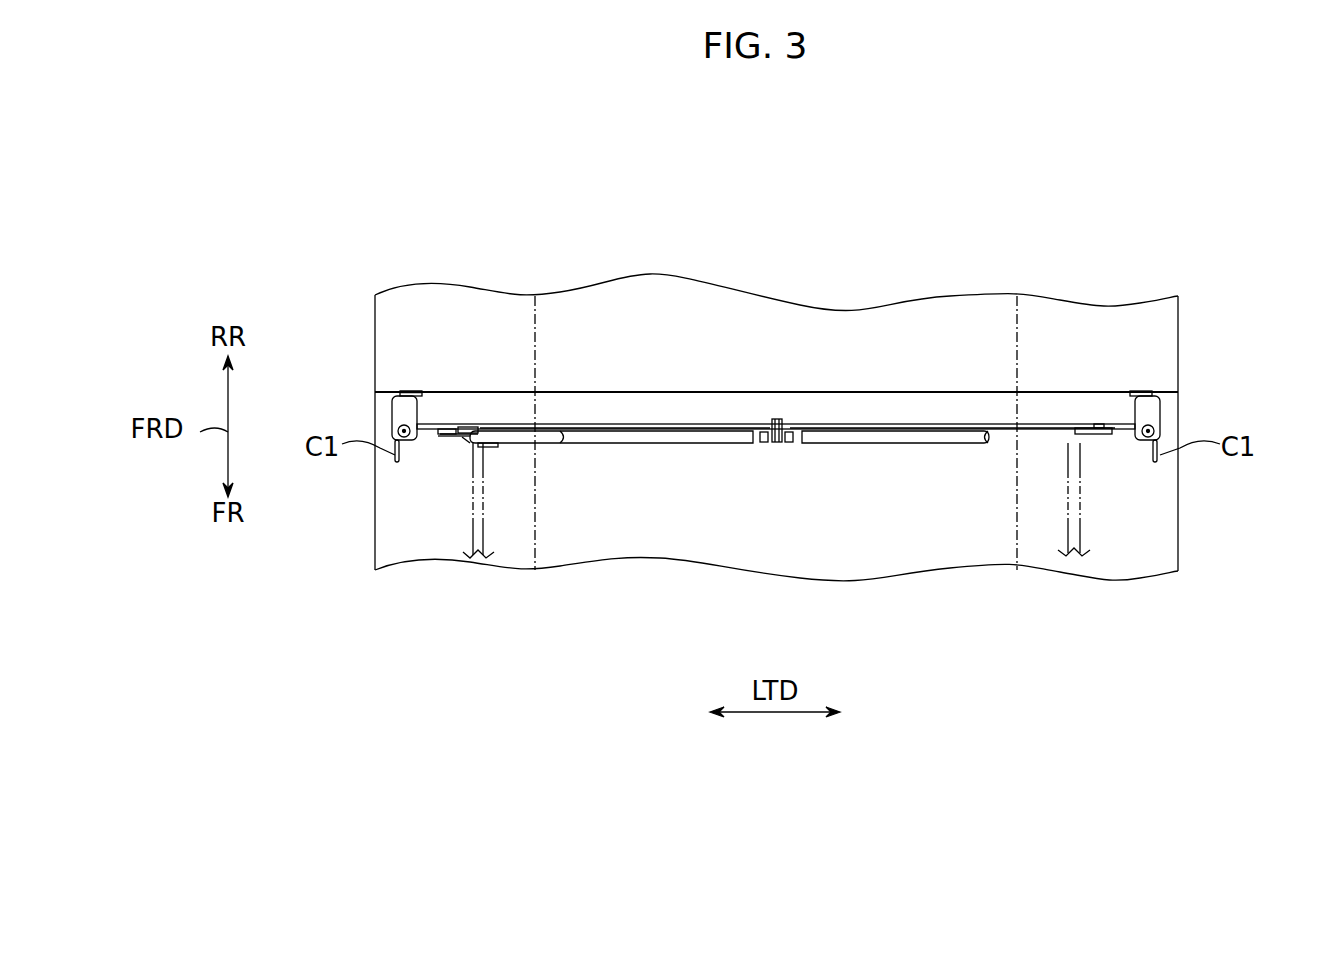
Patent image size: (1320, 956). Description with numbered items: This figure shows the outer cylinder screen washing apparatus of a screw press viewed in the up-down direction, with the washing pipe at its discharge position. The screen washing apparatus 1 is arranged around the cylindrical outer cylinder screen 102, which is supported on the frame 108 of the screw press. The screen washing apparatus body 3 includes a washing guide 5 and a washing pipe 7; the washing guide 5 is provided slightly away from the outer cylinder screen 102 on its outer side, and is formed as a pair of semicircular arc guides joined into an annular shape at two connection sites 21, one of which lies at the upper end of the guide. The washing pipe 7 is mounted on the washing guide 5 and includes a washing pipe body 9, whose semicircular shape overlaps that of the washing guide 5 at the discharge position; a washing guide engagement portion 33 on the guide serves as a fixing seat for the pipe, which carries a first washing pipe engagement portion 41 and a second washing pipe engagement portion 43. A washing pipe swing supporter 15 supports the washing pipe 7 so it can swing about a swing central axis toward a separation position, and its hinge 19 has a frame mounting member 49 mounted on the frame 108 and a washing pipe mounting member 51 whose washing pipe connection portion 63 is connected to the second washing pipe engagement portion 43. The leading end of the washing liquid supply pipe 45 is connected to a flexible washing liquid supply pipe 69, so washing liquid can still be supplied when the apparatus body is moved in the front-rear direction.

The screen washing apparatus 1 is at (900, 416).
The screen washing apparatus body 3 is at (690, 424).
The washing guide 5 is at (975, 424).
The washing pipe 7 is at (672, 444).
The washing pipe body 9 is at (605, 444).
The washing pipe swing supporter 15 is at (392, 418).
The hinge 19 is at (405, 405).
The connection site 21 is at (777, 419).
The washing guide engagement portion 33 is at (463, 428).
The first washing pipe engagement portion 41 is at (463, 445).
The second washing pipe engagement portion 43 is at (440, 440).
The washing liquid supply pipe 45 is at (512, 436).
The frame mounting member 49 is at (420, 392).
The washing pipe mounting member 51 is at (452, 428).
The washing pipe connection portion 63 is at (445, 428).
The flexible washing liquid supply pipe 69 is at (470, 528).
The outer cylinder screen 102 is at (535, 570).
The frame 108 is at (1178, 342).